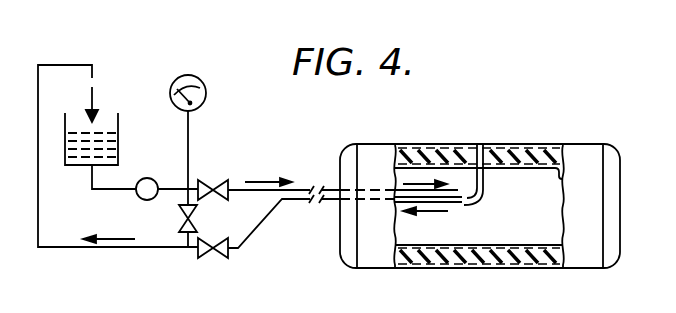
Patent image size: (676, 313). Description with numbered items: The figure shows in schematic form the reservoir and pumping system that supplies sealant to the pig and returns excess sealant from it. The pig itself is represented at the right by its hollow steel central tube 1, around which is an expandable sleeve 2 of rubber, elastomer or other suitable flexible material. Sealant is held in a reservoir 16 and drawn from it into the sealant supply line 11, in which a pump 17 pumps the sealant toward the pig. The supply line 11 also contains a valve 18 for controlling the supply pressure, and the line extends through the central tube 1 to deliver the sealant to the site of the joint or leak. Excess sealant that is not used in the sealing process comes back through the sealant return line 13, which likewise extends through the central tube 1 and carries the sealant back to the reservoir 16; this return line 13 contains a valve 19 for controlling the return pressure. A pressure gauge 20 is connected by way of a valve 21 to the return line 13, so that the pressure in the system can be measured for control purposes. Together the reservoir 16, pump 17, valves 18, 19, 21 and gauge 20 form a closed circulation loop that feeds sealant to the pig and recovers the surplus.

The central tube 1 is at (563, 177).
The expandable sleeve 2 is at (500, 144).
The sealant supply line 11 is at (248, 187).
The sealant return line 13 is at (115, 249).
The reservoir 16 is at (118, 147).
The pump 17 is at (138, 200).
The valve 18 is at (207, 180).
The valve 19 is at (208, 256).
The pressure gauge 20 is at (200, 80).
The valve 21 is at (195, 222).